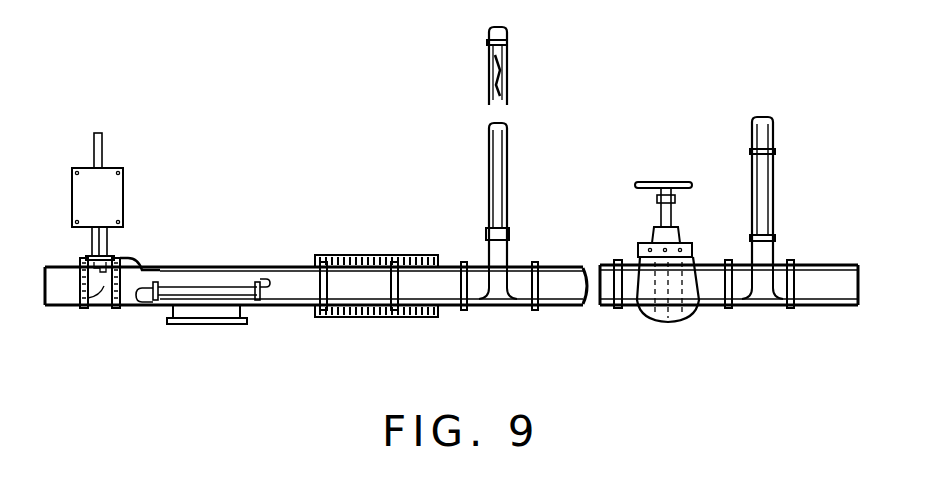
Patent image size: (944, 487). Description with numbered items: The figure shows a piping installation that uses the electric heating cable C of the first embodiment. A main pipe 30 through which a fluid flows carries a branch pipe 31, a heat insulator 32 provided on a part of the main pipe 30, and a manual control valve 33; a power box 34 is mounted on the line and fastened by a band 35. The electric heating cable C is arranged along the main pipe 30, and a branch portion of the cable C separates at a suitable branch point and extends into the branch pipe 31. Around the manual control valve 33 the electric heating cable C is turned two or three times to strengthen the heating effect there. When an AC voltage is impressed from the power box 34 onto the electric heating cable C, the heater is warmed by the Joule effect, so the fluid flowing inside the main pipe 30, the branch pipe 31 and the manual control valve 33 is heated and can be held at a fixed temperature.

The main pipe 30 is at (285, 267).
The branch pipe 31 is at (489, 198).
The heat insulator 32 is at (368, 253).
The manual control valve 33 is at (640, 225).
The power box 34 is at (118, 188).
The band 35 is at (98, 316).
The electric heating cable C is at (215, 273).